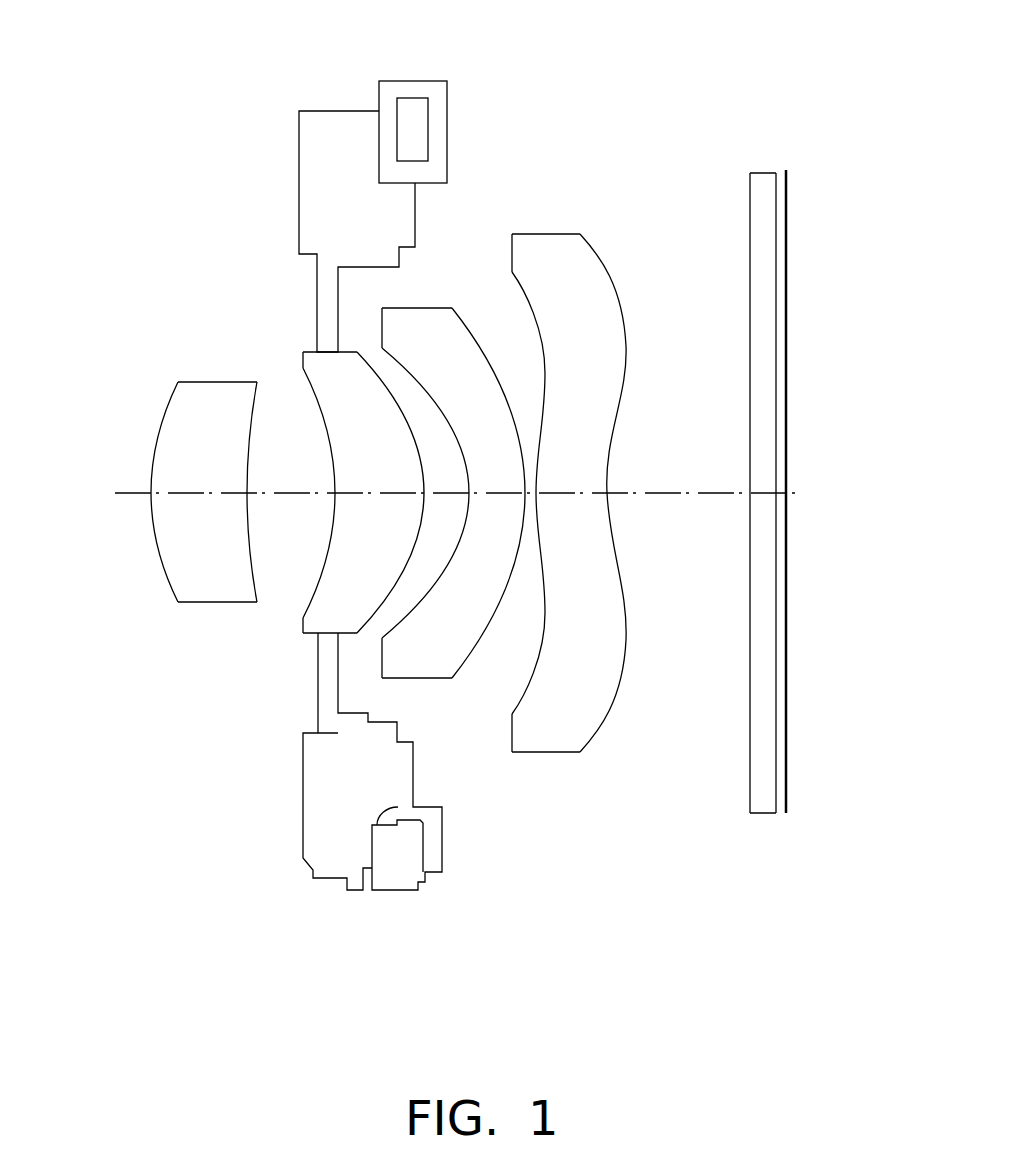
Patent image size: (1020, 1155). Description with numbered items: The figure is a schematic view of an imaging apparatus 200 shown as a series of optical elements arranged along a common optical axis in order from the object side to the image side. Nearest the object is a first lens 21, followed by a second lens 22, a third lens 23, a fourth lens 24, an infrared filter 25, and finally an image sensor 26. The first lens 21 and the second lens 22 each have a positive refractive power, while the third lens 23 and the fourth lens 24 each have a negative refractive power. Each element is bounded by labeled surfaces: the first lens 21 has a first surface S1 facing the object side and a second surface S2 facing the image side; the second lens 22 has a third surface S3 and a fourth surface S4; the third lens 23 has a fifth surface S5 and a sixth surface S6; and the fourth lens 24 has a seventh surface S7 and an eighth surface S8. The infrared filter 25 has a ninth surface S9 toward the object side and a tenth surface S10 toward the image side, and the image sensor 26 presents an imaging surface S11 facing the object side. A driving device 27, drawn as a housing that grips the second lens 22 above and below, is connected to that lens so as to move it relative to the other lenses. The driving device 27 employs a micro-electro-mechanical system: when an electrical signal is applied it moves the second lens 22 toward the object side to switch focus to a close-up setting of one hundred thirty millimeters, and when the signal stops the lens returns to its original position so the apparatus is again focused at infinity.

The imaging apparatus 200 is at (285, 48).
The first lens 21 is at (164, 470).
The second lens 22 is at (311, 476).
The third lens 23 is at (454, 466).
The fourth lens 24 is at (583, 481).
The infrared (IR) filter 25 is at (779, 507).
The image sensor 26 is at (763, 491).
The driving device 27 is at (327, 182).
The first surface S1 is at (163, 430).
The second surface S2 is at (248, 450).
The third surface S3 is at (308, 398).
The fourth surface S4 is at (405, 428).
The fifth surface S5 is at (422, 383).
The sixth surface S6 is at (502, 393).
The seventh surface S7 is at (533, 303).
The eighth surface S8 is at (613, 273).
The ninth surface S9 is at (750, 210).
The tenth surface S10 is at (776, 223).
The imaging surface S11 is at (786, 255).